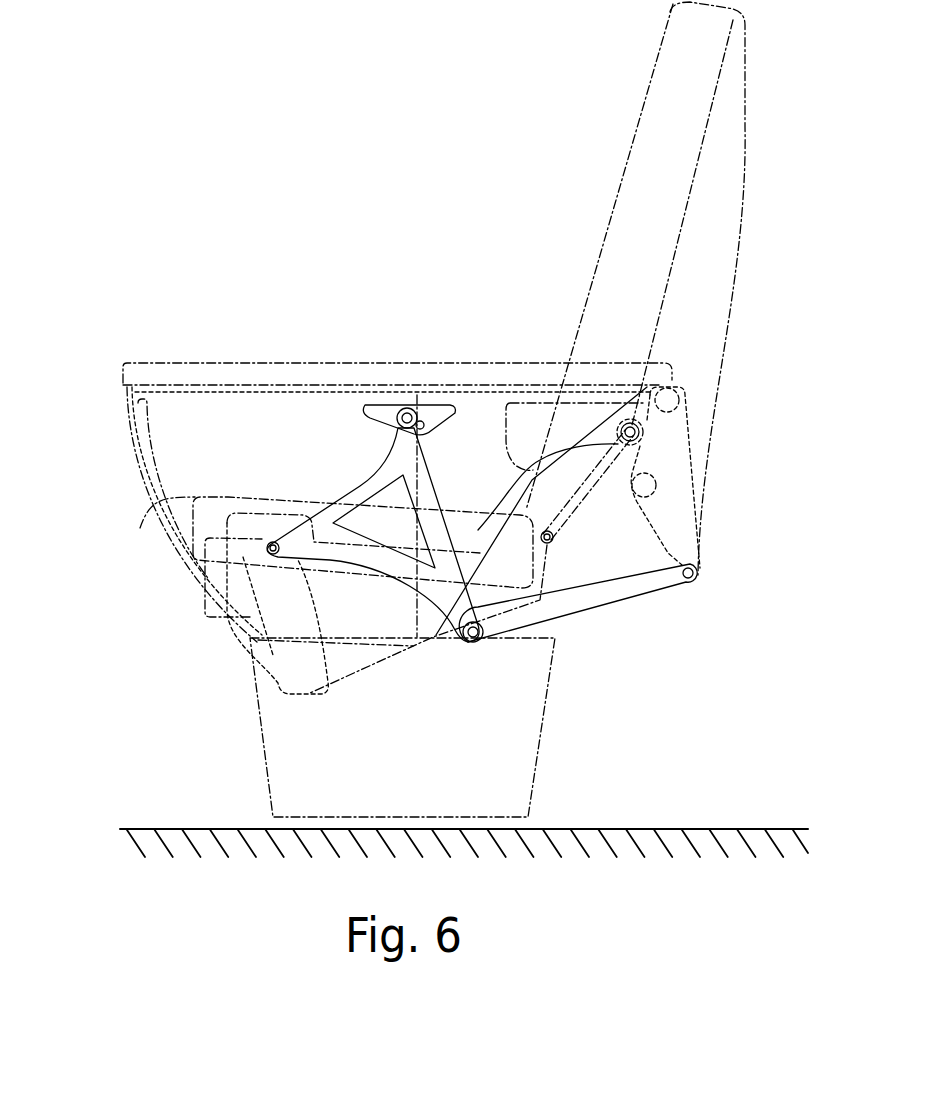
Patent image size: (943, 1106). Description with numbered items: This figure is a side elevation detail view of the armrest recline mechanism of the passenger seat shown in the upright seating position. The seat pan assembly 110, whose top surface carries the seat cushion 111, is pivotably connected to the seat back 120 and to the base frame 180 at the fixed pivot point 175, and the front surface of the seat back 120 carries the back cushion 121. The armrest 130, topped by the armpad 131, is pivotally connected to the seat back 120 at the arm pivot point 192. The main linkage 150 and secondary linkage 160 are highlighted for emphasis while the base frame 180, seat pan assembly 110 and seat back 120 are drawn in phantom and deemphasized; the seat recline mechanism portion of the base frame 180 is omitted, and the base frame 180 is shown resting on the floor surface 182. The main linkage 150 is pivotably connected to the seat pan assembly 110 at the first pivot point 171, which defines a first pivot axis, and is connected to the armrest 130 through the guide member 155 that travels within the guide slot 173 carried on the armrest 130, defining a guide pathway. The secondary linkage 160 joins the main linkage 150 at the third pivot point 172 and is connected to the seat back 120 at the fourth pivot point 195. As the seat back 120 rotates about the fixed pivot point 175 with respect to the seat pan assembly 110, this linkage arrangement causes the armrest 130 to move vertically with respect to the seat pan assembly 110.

The seat pan assembly 110 is at (555, 593).
The seat cushion 111 is at (157, 521).
The seat back 120 is at (738, 262).
The back cushion 121 is at (612, 225).
The armrest 130 is at (127, 432).
The armpad 131 is at (352, 373).
The main linkage 150 is at (375, 482).
The guide member 155 is at (407, 407).
The secondary linkage 160 is at (643, 590).
The first pivot point 171 is at (268, 553).
The third pivot point 172 is at (477, 640).
The guide slot 173 is at (420, 423).
The fixed pivot point 175 is at (549, 546).
The base frame 180 is at (268, 783).
The floor 182 is at (697, 829).
The arm pivot point 192 is at (643, 440).
The fourth pivot point 195 is at (700, 577).